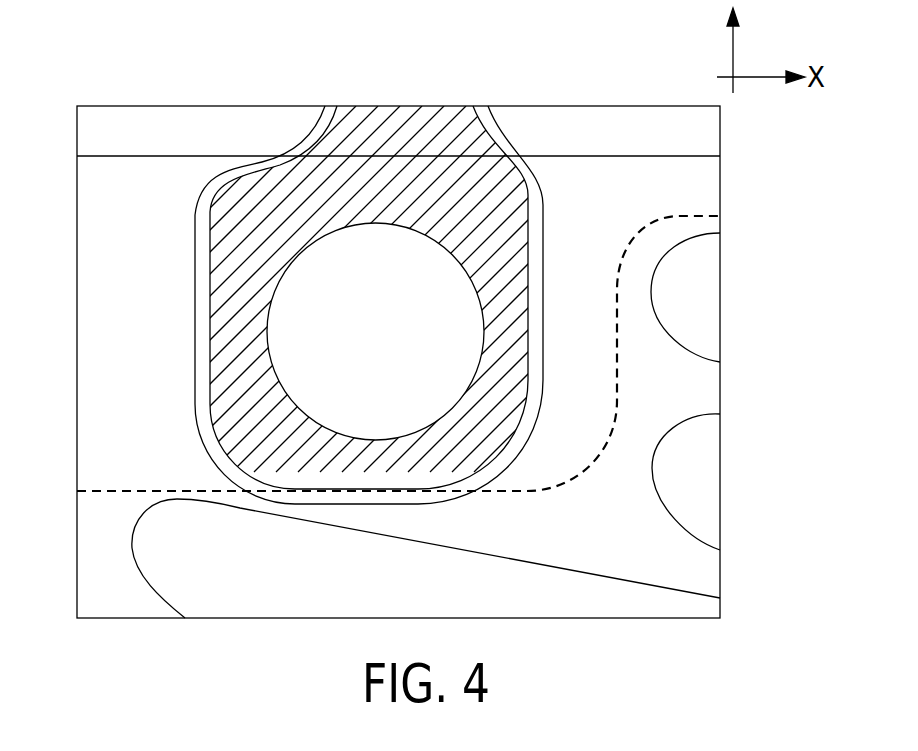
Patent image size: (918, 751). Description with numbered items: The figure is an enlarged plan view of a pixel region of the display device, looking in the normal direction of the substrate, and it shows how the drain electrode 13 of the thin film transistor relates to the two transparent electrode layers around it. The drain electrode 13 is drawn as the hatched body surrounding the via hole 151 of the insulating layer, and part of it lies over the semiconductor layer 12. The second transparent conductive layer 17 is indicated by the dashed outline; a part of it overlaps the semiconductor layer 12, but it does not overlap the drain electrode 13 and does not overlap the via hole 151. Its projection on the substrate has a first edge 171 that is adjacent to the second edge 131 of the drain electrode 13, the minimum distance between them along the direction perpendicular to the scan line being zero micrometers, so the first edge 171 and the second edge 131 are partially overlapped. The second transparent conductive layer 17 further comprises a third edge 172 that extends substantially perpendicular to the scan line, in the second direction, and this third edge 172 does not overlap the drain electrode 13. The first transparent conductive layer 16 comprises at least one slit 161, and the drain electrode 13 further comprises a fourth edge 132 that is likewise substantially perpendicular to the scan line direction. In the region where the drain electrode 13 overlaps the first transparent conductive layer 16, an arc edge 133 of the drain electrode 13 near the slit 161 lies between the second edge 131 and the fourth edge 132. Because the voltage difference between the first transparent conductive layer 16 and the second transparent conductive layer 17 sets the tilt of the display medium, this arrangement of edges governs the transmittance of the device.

The semiconductor layer 12 is at (197, 297).
The drain electrode 13 is at (220, 350).
The second edge 131 is at (322, 491).
The fourth edge 132 is at (530, 293).
The arc edge 133 is at (515, 422).
The via hole 151 is at (297, 386).
The first transparent conductive layer 16 is at (690, 170).
The slit 161 is at (690, 490).
The second transparent conductive layer 17 is at (695, 216).
The first edge 171 is at (400, 453).
The third edge 172 is at (617, 372).